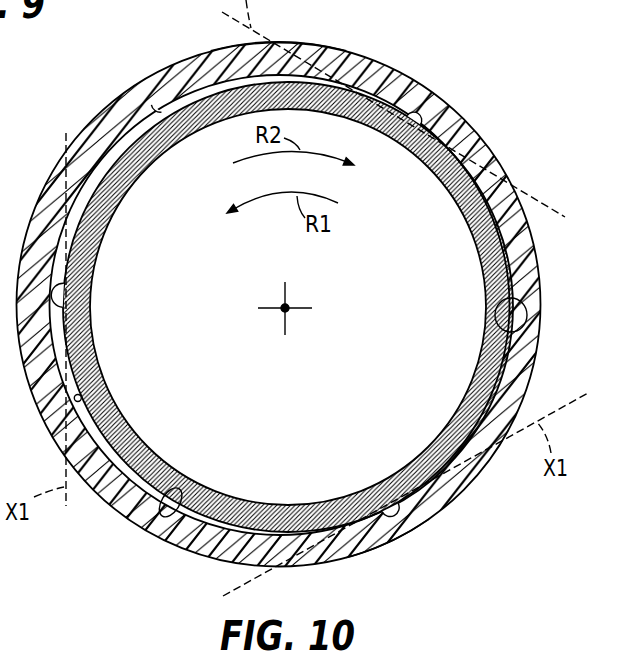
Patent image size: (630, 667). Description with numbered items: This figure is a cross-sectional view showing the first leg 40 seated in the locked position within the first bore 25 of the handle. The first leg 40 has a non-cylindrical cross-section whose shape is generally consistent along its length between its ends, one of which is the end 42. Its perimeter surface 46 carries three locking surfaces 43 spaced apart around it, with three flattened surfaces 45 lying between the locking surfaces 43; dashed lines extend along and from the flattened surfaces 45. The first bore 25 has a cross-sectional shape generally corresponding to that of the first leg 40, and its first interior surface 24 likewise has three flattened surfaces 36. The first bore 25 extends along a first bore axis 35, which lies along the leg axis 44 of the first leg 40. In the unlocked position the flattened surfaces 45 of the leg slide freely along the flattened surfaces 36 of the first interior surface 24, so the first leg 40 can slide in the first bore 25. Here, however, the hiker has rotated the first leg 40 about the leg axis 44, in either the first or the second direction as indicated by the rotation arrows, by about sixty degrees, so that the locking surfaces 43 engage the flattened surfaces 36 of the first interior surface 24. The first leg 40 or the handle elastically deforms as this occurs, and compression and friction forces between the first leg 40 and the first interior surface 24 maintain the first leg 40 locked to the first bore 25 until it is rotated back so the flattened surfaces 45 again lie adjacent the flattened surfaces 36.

The first interior surface 24 is at (415, 500).
The first bore 25 is at (466, 170).
The first bore axis 35 is at (288, 303).
The flattened surfaces 36 is at (186, 96).
The first leg 40 is at (135, 141).
The end 42 is at (80, 398).
The locking surfaces 43 is at (160, 120).
The leg axis 44 is at (289, 312).
The flattened surfaces 45 is at (72, 285).
The perimeter surface 46 is at (300, 52).